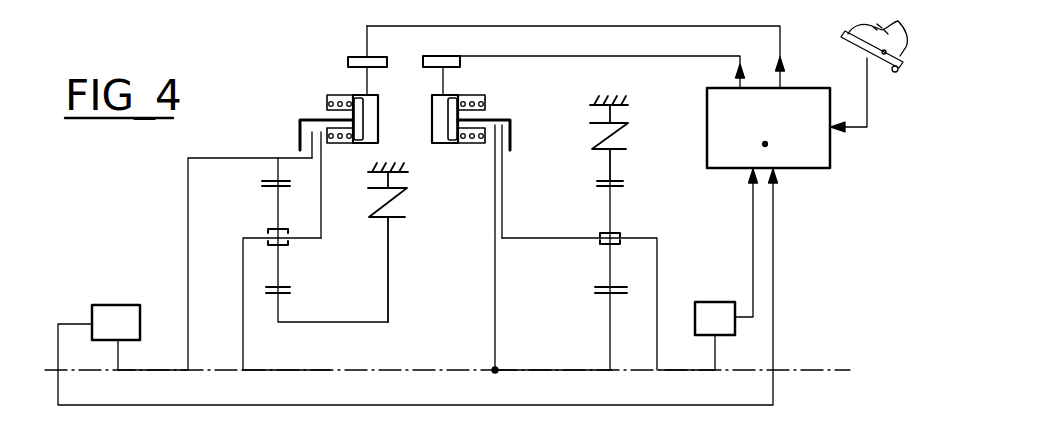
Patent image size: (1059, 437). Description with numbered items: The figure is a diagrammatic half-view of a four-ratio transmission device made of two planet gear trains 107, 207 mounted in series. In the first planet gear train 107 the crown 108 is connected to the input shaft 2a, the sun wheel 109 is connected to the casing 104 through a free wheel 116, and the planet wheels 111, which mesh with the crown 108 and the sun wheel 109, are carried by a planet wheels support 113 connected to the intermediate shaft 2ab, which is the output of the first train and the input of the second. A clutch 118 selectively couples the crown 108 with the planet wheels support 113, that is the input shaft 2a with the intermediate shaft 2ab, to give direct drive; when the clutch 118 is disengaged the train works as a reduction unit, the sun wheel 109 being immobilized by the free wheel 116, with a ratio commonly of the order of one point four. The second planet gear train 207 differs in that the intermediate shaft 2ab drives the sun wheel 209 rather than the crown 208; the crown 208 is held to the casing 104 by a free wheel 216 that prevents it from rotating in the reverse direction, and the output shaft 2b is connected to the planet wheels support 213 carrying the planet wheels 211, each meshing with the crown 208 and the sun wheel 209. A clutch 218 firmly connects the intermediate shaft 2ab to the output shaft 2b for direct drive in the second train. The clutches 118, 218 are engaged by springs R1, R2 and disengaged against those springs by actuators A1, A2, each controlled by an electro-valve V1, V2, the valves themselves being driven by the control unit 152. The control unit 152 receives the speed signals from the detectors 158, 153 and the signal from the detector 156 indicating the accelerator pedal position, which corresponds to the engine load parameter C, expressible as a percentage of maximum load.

The input shaft 2a is at (163, 370).
The output shaft 2b is at (680, 370).
The intermediate shaft 2ab is at (375, 370).
The casing 104 is at (408, 165).
The planet gear train 107 is at (299, 240).
The crown 108 is at (277, 178).
The sun wheel 109 is at (282, 306).
The planet wheels 111 is at (277, 200).
The planet wheels support 113 is at (263, 304).
The free wheel 116 is at (405, 205).
The clutch 118 is at (300, 133).
The control unit 152 is at (768, 128).
The detector 153 is at (735, 324).
The detector 156 is at (883, 72).
The detector 158 is at (105, 305).
The second planet gear train 207 is at (631, 255).
The crown 208 is at (613, 158).
The sun wheel 209 is at (610, 313).
The planet wheels 211 is at (608, 202).
The planet wheels support 213 is at (660, 249).
The free wheel 216 is at (592, 135).
The clutch 218 is at (512, 132).
The electro-valve V1 is at (352, 52).
The electro-valve V2 is at (446, 55).
The actuator A1 is at (378, 126).
The actuator A2 is at (431, 113).
The spring R1 is at (330, 93).
The spring R2 is at (470, 95).
The load parameter C is at (848, 106).